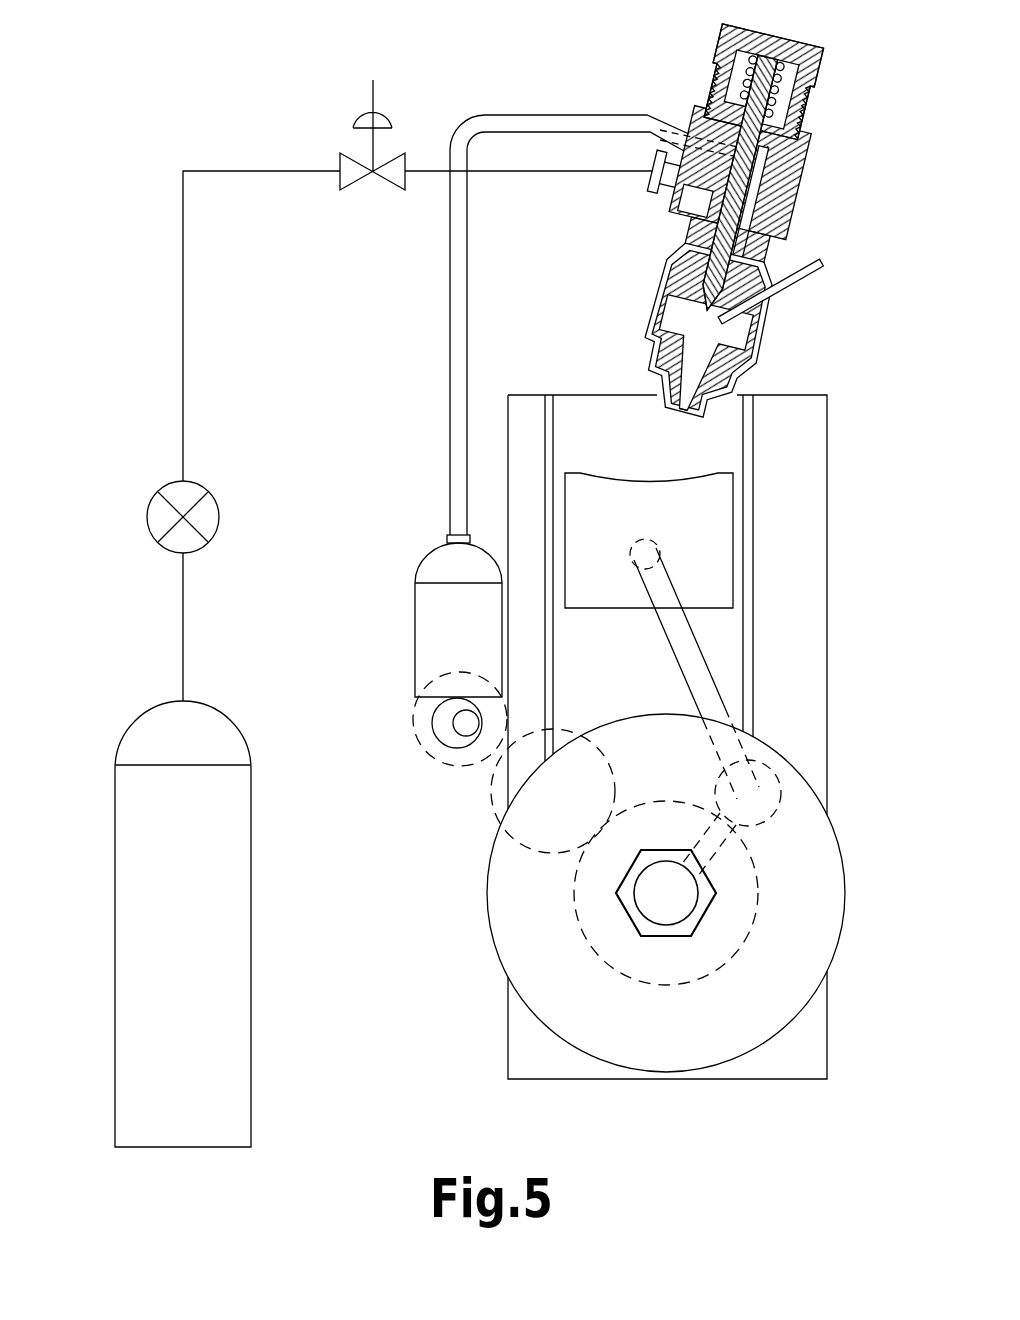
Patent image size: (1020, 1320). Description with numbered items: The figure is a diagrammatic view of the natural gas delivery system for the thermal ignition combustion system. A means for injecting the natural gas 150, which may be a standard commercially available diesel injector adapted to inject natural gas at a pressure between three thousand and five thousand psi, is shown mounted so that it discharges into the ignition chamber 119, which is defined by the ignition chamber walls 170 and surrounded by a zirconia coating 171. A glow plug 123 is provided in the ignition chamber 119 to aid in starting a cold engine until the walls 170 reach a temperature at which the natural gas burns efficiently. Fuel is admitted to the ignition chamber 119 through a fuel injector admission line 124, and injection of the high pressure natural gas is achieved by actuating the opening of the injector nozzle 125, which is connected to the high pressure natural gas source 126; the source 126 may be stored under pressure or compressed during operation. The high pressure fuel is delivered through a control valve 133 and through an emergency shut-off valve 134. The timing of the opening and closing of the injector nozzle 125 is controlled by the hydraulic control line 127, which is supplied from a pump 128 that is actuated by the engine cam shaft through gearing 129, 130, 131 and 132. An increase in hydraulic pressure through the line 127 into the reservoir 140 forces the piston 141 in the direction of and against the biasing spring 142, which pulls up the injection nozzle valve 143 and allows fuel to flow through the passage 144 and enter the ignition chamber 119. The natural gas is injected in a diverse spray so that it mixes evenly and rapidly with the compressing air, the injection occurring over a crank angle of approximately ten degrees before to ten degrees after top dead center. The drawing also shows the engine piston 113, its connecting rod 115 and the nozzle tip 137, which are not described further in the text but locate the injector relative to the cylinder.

The piston 113 is at (608, 490).
The connecting rod 115 is at (667, 643).
The ignition chamber 119 is at (752, 328).
The glow plug 123 is at (824, 265).
The fuel injector admission line 124 is at (183, 313).
The injector nozzle 125 is at (692, 257).
The high pressure natural gas source 126 is at (251, 1097).
The hydraulic control line 127 is at (467, 313).
The pump 128 is at (430, 625).
The gearing 129 is at (743, 955).
The gearing 130 is at (482, 765).
The gearing 131 is at (448, 765).
The gearing 132 is at (443, 720).
The control valve 133 is at (202, 480).
The emergency shut-off valve 134 is at (345, 152).
The nozzle orifice 137 is at (682, 405).
The reservoir 140 is at (803, 168).
The piston 141 is at (773, 135).
The biasing spring 142 is at (778, 52).
The injection nozzle valve 143 is at (728, 222).
The passage 144 is at (740, 248).
The means for injecting the natural gas 150 is at (858, 208).
The ignition chamber walls 170 is at (672, 285).
The zirconia coating 171 is at (655, 332).